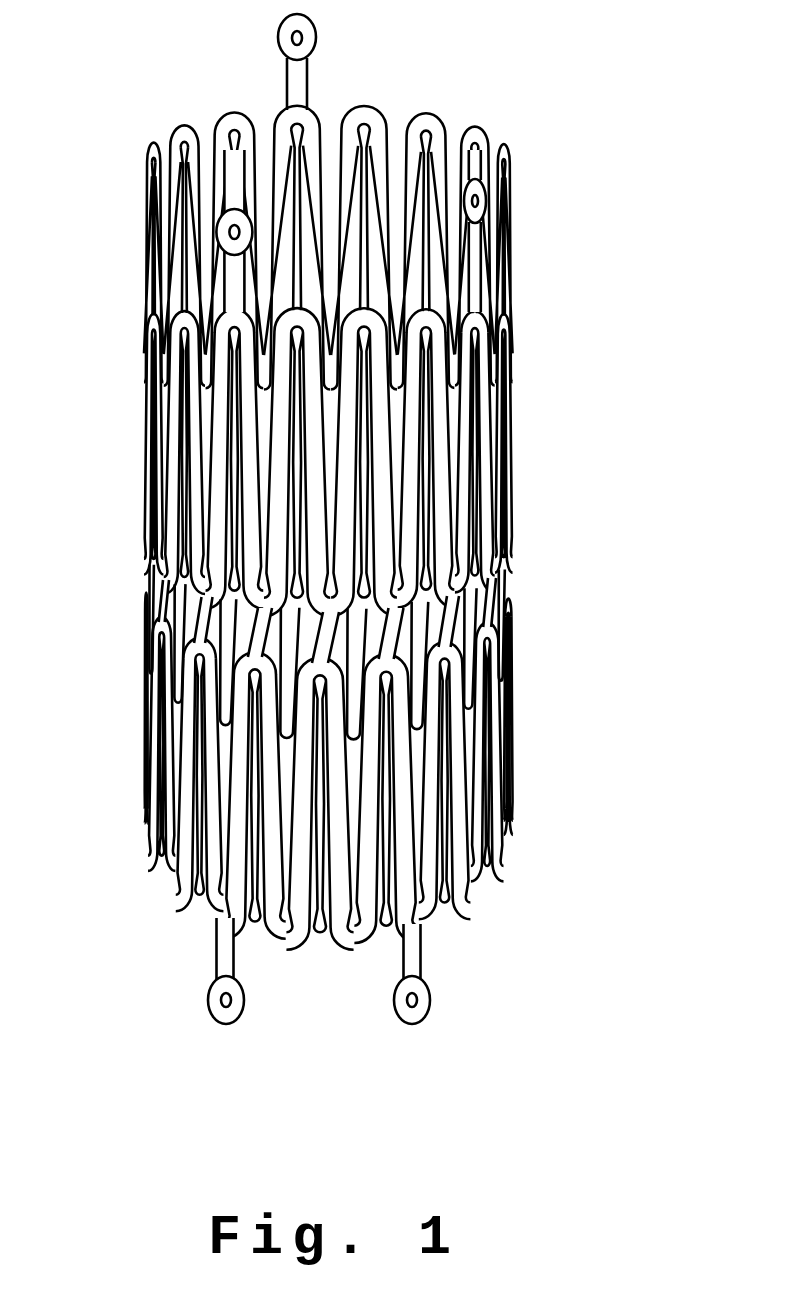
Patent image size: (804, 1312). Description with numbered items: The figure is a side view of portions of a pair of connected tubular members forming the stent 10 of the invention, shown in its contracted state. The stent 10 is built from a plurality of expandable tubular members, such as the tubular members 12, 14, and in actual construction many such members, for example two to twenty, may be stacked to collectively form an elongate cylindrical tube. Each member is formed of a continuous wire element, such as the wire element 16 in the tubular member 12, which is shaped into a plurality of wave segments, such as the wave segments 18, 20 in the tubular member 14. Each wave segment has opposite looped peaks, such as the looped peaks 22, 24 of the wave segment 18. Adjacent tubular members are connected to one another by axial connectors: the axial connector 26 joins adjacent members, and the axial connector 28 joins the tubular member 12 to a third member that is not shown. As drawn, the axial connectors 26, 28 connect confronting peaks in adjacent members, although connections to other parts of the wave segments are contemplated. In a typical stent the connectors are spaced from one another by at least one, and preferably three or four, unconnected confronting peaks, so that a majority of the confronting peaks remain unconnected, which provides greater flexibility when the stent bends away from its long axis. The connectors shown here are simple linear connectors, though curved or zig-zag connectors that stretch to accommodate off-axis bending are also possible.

The stent 10 is at (333, 517).
The tubular member 12 is at (507, 405).
The tubular member 14 is at (505, 713).
The wire element 16 is at (483, 162).
The wave segment 18 is at (443, 148).
The wave segment 20 is at (380, 147).
The looped peak 22 is at (192, 637).
The looped peak 24 is at (170, 888).
The axial connector 26 is at (258, 630).
The axial connector 28 is at (232, 264).